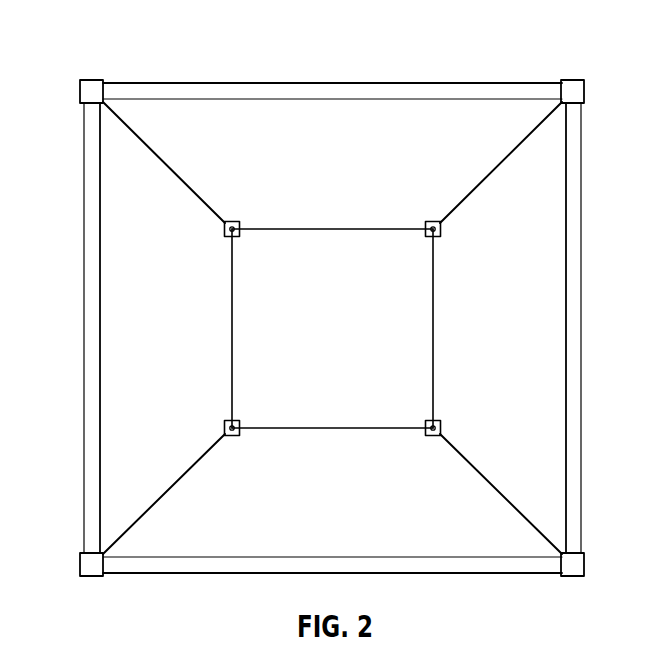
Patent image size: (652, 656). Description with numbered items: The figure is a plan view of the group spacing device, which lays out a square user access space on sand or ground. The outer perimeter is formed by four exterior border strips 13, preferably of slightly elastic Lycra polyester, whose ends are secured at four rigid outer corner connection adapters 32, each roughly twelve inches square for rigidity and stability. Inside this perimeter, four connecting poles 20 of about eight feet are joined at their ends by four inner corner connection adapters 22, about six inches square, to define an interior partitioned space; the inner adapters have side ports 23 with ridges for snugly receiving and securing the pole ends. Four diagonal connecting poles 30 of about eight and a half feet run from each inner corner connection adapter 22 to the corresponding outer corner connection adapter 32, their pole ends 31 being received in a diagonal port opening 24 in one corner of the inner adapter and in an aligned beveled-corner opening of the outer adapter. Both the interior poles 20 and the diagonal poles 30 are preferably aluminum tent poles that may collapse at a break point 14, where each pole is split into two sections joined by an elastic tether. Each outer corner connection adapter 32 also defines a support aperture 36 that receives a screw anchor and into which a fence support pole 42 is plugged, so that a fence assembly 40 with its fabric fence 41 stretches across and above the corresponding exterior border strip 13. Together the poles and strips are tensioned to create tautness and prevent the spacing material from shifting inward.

The exterior border strip 13 is at (332, 83).
The break point 14 is at (142, 140).
The connecting pole 20 is at (362, 229).
The inner corner connection adapter 22 is at (224, 230).
The port 23 is at (238, 237).
The diagonal port opening 24 is at (237, 221).
The diagonal connecting pole 30 is at (165, 163).
The pole end 31 is at (233, 438).
The outer corner connection adapter 32 is at (88, 80).
The support aperture 36 is at (93, 93).
The fence assembly 40 is at (82, 100).
The fence 41 is at (415, 644).
The fence support pole 42 is at (0, 400).